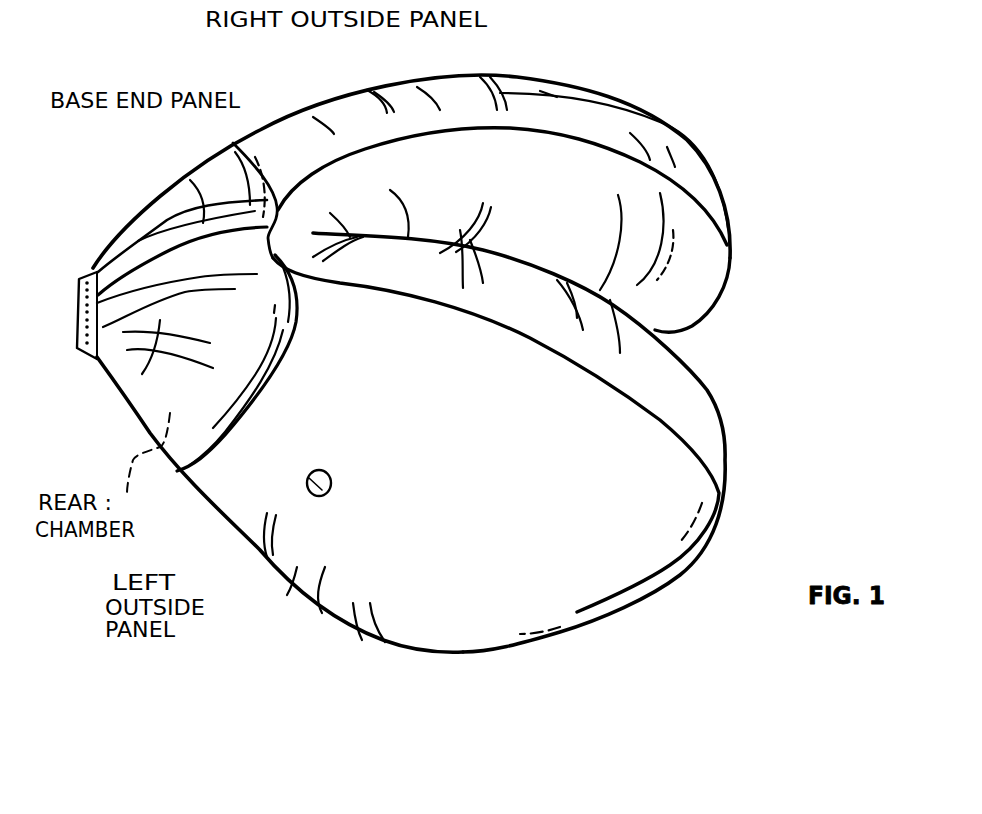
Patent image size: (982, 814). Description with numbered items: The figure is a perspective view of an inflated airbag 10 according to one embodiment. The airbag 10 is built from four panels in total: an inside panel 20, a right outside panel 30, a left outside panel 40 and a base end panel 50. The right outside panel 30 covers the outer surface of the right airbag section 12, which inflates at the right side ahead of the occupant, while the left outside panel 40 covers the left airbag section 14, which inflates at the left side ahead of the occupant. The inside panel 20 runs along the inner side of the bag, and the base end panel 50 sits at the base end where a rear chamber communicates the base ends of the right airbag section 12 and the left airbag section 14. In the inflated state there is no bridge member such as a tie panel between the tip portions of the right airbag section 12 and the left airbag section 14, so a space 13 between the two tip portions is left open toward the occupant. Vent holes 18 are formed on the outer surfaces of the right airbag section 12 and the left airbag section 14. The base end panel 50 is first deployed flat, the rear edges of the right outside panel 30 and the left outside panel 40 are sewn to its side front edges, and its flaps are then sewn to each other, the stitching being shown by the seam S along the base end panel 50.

The airbag 10 is at (507, 61).
The right airbag section 12 is at (586, 115).
The space 13 is at (673, 335).
The left airbag section 14 is at (557, 615).
The vent hole 18 is at (331, 483).
The inside panel 20 is at (687, 388).
The right outside panel 30 is at (360, 105).
The left outside panel 40 is at (290, 583).
The base end panel 50 is at (177, 193).
The seam S is at (94, 272).